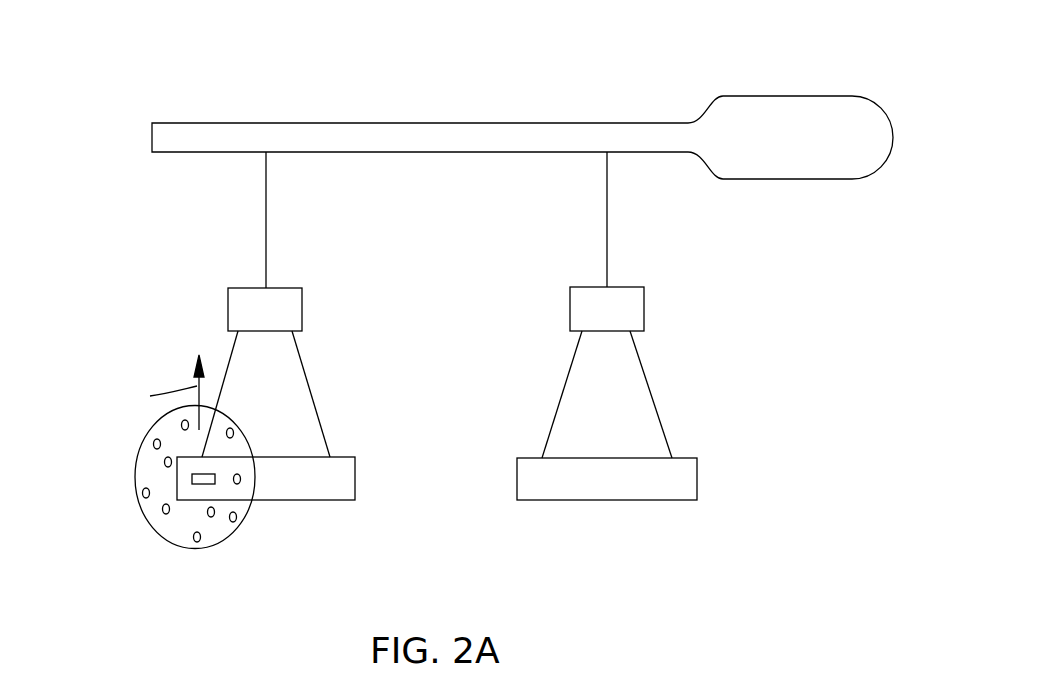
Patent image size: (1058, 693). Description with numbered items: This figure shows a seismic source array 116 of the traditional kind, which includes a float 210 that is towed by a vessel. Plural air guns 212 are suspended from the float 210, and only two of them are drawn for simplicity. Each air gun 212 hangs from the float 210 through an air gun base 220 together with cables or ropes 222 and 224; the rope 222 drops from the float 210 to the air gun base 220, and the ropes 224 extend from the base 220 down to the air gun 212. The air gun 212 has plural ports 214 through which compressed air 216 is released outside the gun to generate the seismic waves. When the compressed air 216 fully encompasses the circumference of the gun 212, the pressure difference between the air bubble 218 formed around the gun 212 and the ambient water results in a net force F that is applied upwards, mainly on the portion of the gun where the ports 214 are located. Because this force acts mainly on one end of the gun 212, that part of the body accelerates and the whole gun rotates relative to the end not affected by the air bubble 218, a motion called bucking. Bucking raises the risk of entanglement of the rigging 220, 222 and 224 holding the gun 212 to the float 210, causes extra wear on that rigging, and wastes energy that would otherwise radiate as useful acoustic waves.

The seismic source array 116 is at (473, 295).
The float 210 is at (417, 122).
The air gun 212 is at (267, 503).
The ports 214 is at (203, 485).
The compressed air 216 is at (153, 444).
The air bubble 218 is at (140, 502).
The air gun base 220 is at (303, 308).
The cable or rope 222 is at (267, 220).
The cable or rope 224 is at (303, 377).